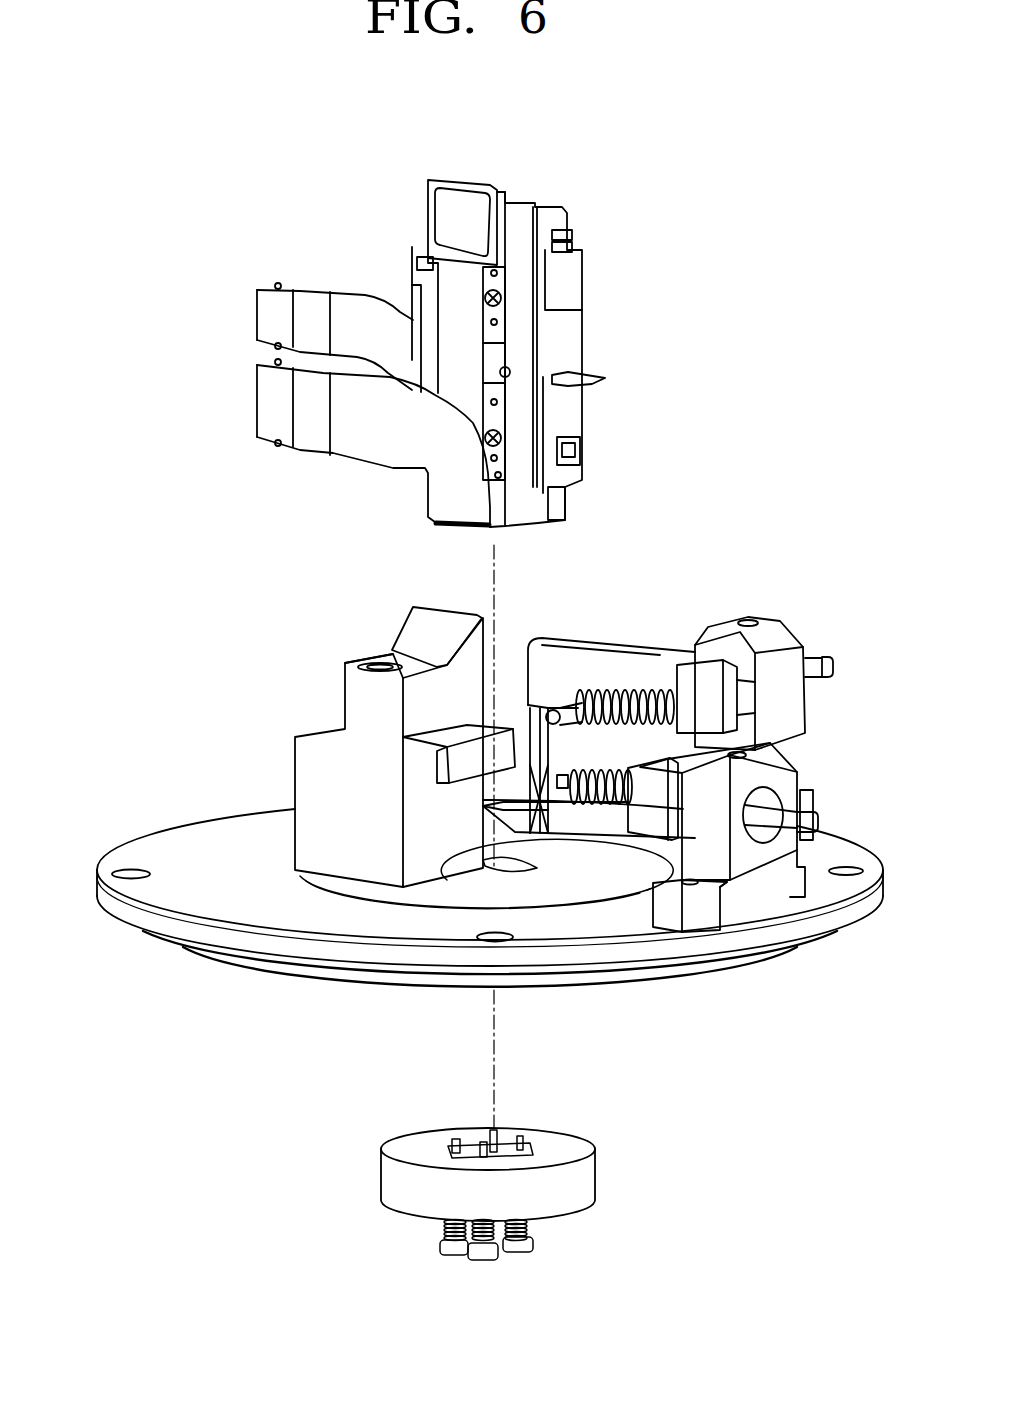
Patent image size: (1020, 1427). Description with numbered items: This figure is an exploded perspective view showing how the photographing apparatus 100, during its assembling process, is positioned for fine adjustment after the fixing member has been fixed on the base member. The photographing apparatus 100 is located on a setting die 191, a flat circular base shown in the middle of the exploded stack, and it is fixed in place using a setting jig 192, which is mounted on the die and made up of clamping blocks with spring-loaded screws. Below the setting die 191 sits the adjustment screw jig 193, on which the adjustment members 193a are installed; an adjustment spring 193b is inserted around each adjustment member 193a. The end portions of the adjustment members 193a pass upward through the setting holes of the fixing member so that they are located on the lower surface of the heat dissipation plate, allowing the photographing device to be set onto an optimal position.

The photographing apparatus 100 is at (627, 237).
The setting die 191 is at (188, 892).
The setting jig 192 is at (477, 637).
The adjustment screw jig 193 is at (587, 1175).
The adjustment member 193a is at (457, 1250).
The adjustment spring 193b is at (436, 1229).